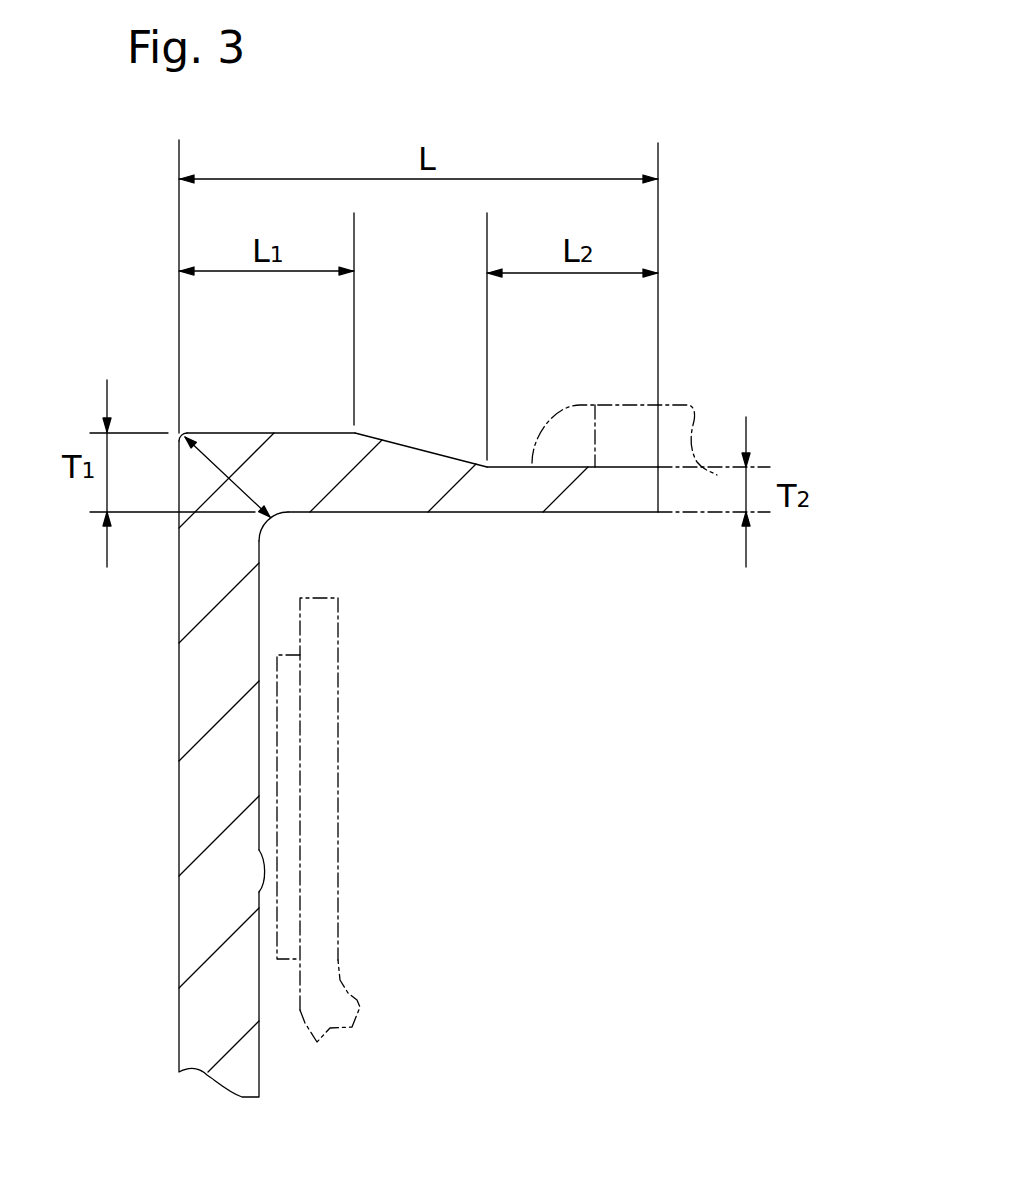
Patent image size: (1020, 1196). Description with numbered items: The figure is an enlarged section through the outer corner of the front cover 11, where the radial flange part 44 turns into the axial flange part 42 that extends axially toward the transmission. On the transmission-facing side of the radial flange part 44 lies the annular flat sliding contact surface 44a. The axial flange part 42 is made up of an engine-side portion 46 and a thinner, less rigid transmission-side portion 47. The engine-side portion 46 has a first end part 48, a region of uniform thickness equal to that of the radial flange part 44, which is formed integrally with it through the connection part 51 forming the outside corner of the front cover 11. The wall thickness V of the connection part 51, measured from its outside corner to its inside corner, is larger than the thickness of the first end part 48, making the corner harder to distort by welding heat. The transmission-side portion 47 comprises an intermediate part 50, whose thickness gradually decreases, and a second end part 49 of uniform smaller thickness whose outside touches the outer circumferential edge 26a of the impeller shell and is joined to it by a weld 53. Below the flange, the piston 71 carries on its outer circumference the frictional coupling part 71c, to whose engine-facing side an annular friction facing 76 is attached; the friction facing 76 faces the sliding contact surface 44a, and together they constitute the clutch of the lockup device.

The front cover 11 is at (351, 685).
The outer circumferential edge of the impeller shell 26a is at (680, 392).
The axial flange part 42 is at (422, 431).
The radial flange part 44 is at (195, 763).
The sliding contact surface 44a is at (258, 890).
The engine-side portion 46 is at (315, 407).
The transmission-side portion 47 is at (513, 427).
The first end part 48 is at (277, 447).
The second end part 49 is at (577, 495).
The intermediate part 50 is at (400, 495).
The connection part 51 is at (212, 436).
The weld 53 is at (578, 423).
The piston 71 is at (409, 820).
The frictional coupling part 71c is at (338, 753).
The friction facing 76 is at (288, 899).
The wall thickness of the connection part V is at (238, 487).